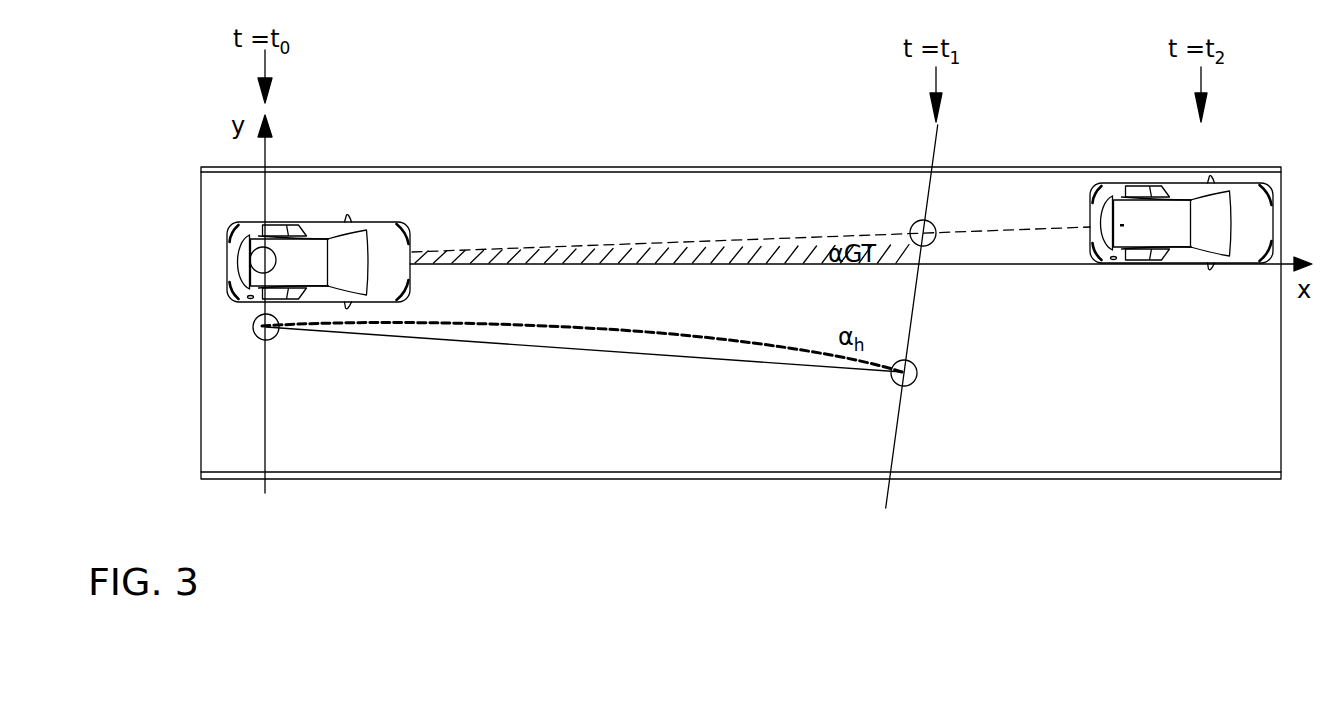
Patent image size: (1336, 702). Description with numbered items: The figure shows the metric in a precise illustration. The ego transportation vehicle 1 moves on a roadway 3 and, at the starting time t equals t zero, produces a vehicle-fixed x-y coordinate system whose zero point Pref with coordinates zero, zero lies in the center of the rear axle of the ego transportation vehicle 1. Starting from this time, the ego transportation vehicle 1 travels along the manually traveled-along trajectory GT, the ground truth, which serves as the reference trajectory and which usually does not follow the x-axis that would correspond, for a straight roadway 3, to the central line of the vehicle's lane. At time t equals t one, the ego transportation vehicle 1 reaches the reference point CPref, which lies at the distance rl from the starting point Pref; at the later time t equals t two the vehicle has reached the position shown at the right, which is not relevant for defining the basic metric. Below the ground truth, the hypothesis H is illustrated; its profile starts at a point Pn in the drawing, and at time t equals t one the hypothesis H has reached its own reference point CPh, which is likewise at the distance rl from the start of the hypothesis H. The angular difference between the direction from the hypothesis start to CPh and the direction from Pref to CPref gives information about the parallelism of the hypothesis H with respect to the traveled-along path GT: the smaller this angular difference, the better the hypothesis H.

The ego transportation vehicle 1 is at (335, 233).
The roadway 3 is at (685, 487).
The manually traveled-along trajectory (ground truth) GT is at (690, 241).
The hypothesis H is at (772, 342).
The distance r1 rl is at (929, 316).
The reference point CPref is at (913, 225).
The reference point of the hypothesis CPh is at (914, 378).
The zero point / starting point Pref is at (255, 259).
The hypothesis start position Pn is at (255, 328).